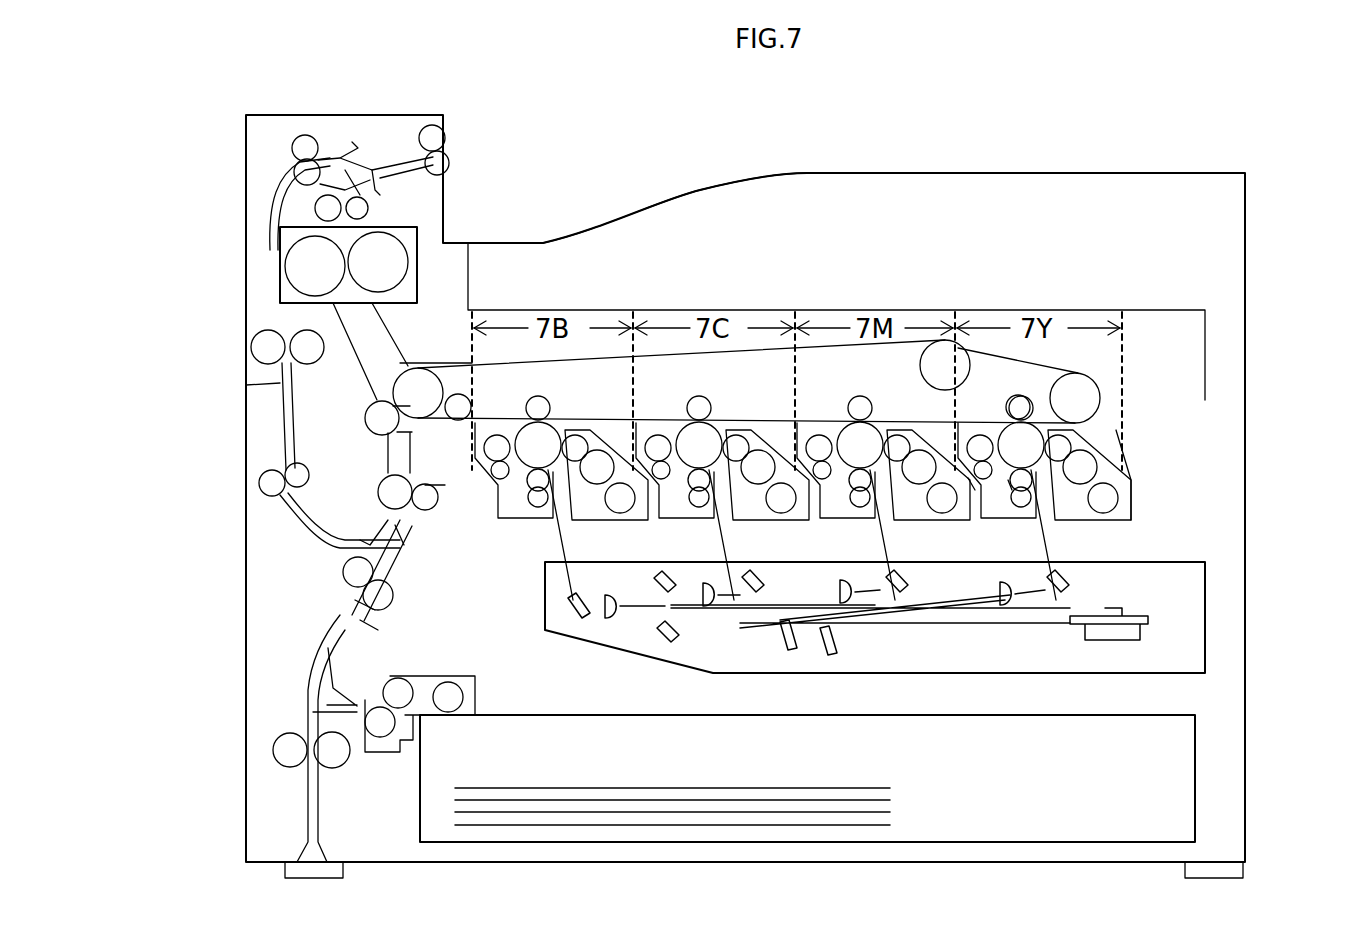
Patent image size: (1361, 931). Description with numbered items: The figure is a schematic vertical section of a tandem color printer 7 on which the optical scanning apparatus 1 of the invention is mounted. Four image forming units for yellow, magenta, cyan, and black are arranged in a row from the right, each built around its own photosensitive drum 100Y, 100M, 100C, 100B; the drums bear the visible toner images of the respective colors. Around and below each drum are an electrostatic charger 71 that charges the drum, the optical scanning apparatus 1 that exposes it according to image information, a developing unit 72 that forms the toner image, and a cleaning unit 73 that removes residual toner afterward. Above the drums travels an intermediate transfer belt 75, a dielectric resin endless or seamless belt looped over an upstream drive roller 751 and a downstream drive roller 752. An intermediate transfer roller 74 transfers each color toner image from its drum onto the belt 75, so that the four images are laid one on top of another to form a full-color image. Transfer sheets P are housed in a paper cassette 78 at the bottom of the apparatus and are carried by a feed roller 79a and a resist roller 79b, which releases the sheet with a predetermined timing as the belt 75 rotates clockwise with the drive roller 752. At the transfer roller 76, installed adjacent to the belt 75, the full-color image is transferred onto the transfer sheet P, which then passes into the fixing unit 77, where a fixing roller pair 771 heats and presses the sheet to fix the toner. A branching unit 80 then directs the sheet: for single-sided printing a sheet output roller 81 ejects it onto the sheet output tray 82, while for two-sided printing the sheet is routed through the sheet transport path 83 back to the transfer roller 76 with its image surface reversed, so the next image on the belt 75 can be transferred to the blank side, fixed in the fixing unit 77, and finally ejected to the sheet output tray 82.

The optical scanning apparatus 1 is at (1207, 602).
The printer 7 is at (1280, 333).
The electrostatic charger 71 is at (1015, 485).
The developing unit 72 is at (1135, 487).
The cleaning unit 73 is at (972, 480).
The intermediate transfer roller 74 is at (1013, 402).
The intermediate transfer belt 75 is at (1032, 376).
The upstream drive roller 751 is at (1090, 397).
The downstream drive roller 752 is at (418, 392).
The transfer roller 76 is at (378, 423).
The fixing unit 77 is at (417, 272).
The fixing roller pair 771 is at (315, 268).
The paper cassette 78 is at (1200, 780).
The feed roller 79a is at (452, 688).
The resist roller 79b is at (427, 508).
The branching unit 80 is at (350, 172).
The sheet output roller 81 is at (446, 163).
The sheet output tray 82 is at (687, 193).
The sheet transport path 83 is at (280, 383).
The photosensitive drum 100B is at (546, 435).
The photosensitive drum 100C is at (708, 435).
The photosensitive drum 100M is at (863, 432).
The photosensitive drum 100Y is at (1030, 438).
The transfer sheet P is at (770, 786).